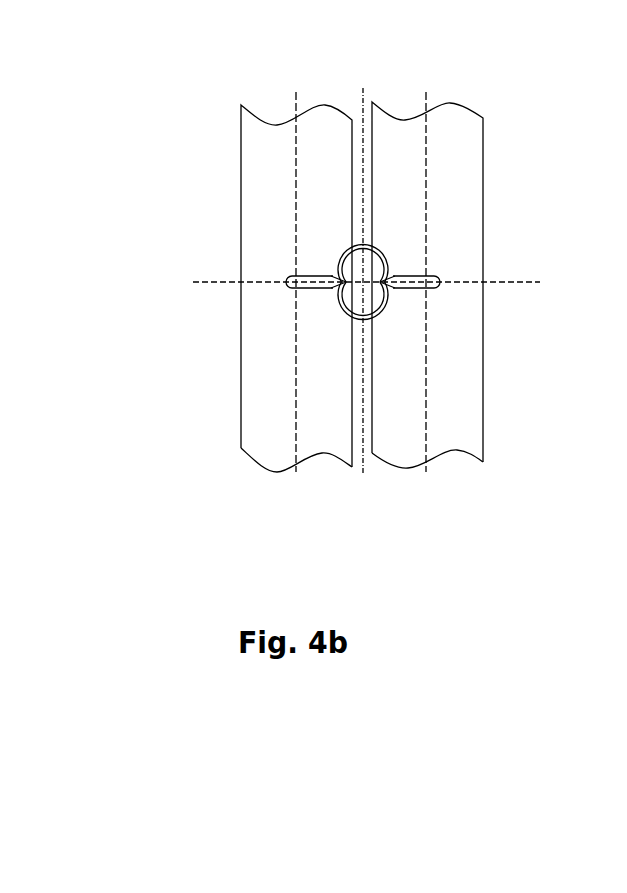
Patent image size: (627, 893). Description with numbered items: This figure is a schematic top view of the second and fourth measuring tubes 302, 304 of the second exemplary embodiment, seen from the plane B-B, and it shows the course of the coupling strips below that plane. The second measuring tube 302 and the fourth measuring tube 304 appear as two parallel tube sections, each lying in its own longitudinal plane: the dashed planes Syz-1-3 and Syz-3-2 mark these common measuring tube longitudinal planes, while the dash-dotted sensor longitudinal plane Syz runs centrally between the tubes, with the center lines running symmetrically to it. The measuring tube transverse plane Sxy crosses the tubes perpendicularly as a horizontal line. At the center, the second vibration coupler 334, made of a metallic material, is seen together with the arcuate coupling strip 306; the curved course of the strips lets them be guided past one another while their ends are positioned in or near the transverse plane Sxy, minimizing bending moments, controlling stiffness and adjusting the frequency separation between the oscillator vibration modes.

The second measuring tube 302 is at (483, 380).
The fourth measuring tube 304 is at (245, 378).
The first coupling strip 306 is at (345, 313).
The second vibration coupler 334 is at (384, 246).
The measuring tube transverse plane Sxy is at (230, 282).
The sensor longitudinal plane Syz is at (363, 100).
The common measuring tube longitudinal plane Syz-1-3 is at (296, 410).
The common measuring tube longitudinal plane Syz-3-2 is at (427, 432).